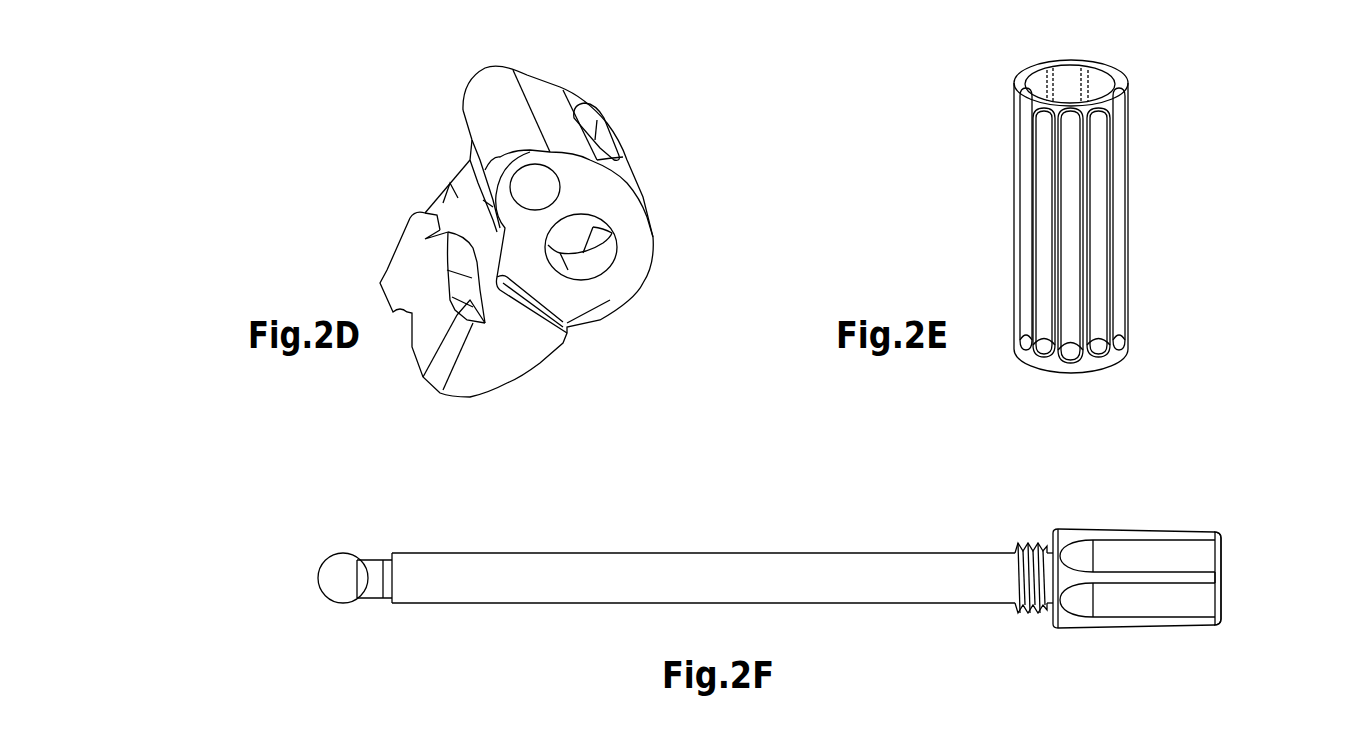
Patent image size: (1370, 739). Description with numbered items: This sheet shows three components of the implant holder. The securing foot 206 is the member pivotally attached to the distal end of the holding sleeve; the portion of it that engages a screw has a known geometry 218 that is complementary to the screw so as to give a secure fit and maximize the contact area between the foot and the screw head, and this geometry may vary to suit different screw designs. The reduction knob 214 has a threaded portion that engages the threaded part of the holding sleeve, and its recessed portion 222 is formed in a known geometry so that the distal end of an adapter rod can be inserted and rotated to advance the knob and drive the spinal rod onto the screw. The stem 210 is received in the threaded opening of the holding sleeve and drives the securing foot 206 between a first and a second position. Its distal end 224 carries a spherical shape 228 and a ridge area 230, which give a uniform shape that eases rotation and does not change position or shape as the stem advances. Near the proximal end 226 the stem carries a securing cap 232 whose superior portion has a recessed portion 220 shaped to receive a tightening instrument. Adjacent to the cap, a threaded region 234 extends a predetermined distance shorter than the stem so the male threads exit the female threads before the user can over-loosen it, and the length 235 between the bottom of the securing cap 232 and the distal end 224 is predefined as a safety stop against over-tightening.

In FIG. 2D, the securing foot 206 is at (561, 228).
In FIG. 2D, the known geometry 218 is at (420, 272).
In FIG. 2E, the reduction knob 214 is at (1063, 208).
In FIG. 2E, the recessed portion 222 is at (1078, 82).
In FIG. 2F, the stem 210 is at (785, 545).
In FIG. 2F, the distal end 224 is at (320, 573).
In FIG. 2F, the spherical shape 228 is at (343, 552).
In FIG. 2F, the ridge area 230 is at (358, 558).
In FIG. 2F, the length 235 is at (822, 605).
In FIG. 2F, the threaded region 234 is at (1021, 540).
In FIG. 2F, the securing cap 232 is at (1153, 532).
In FIG. 2F, the recessed portion 220 is at (1224, 548).
In FIG. 2F, the proximal end 226 is at (1237, 578).